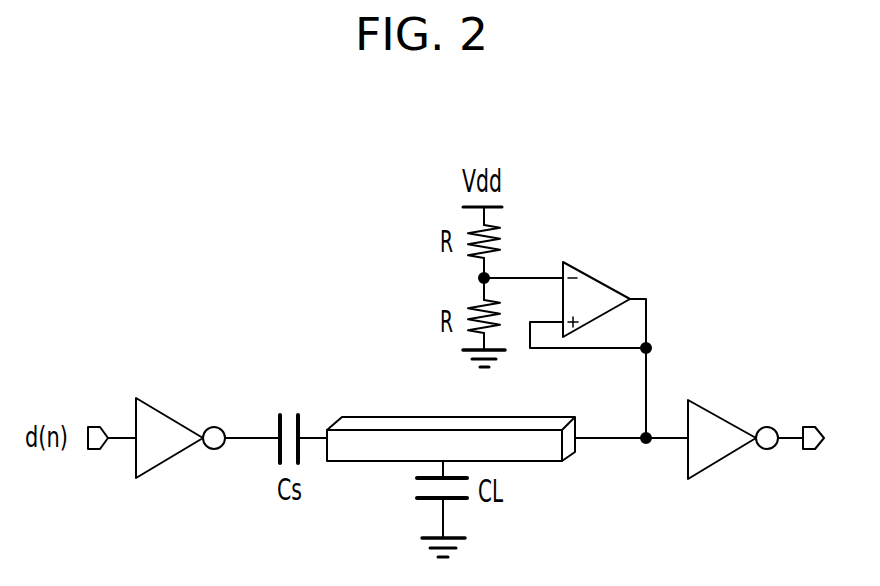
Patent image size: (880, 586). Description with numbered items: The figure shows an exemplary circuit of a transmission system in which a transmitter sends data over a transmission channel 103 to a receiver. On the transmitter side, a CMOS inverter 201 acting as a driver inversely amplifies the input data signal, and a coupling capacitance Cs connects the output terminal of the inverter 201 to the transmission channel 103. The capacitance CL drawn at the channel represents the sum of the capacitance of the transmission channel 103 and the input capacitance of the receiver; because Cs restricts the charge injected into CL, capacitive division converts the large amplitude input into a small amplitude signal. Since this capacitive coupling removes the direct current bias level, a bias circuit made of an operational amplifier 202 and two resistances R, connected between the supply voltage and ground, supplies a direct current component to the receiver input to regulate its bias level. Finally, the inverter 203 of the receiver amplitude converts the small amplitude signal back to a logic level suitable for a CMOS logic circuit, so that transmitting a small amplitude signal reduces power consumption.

The CMOS inverter 201 is at (167, 413).
The transmission channel 103 is at (475, 417).
The operational amplifier 202 is at (594, 279).
The inverter 203 is at (724, 420).